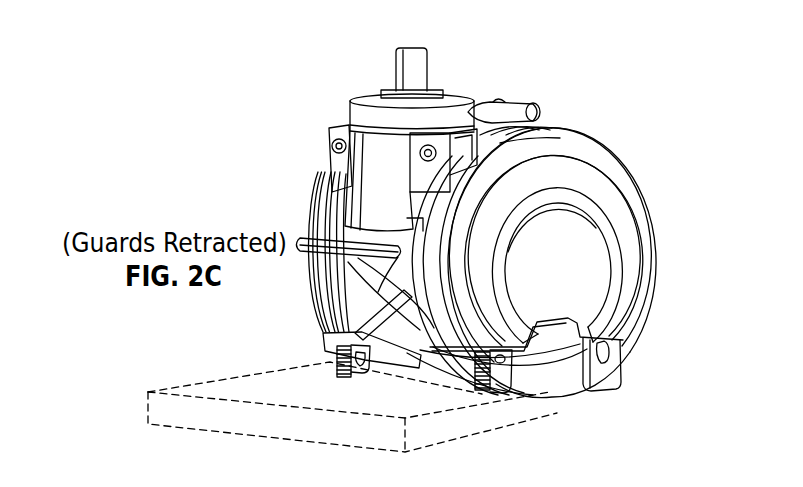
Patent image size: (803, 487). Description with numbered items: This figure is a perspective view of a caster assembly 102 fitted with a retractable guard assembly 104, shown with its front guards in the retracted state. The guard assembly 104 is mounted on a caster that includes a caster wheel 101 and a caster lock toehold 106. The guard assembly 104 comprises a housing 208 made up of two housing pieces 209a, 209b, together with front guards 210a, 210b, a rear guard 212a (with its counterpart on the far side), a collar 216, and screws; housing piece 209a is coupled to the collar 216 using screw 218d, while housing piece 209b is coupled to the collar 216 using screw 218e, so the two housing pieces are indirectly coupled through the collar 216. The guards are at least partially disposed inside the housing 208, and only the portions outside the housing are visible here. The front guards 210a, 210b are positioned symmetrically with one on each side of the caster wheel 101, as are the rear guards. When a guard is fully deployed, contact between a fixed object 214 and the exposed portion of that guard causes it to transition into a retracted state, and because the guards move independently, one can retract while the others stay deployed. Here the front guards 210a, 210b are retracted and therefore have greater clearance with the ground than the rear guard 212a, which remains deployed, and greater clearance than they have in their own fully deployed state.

The caster wheel 101 is at (552, 380).
The caster assembly 102 is at (597, 63).
The retractable guard assembly 104 is at (342, 76).
The caster lock toehold 106 is at (300, 243).
The housing 208 is at (491, 98).
The housing piece 209a is at (593, 150).
The housing piece 209b is at (317, 308).
The front guard 210a is at (473, 388).
The front guard 210b is at (334, 367).
The rear guard 212a is at (622, 363).
The fixed object 214 is at (149, 405).
The collar 216 is at (330, 207).
The screw 218d is at (420, 154).
The screw 218e is at (336, 140).